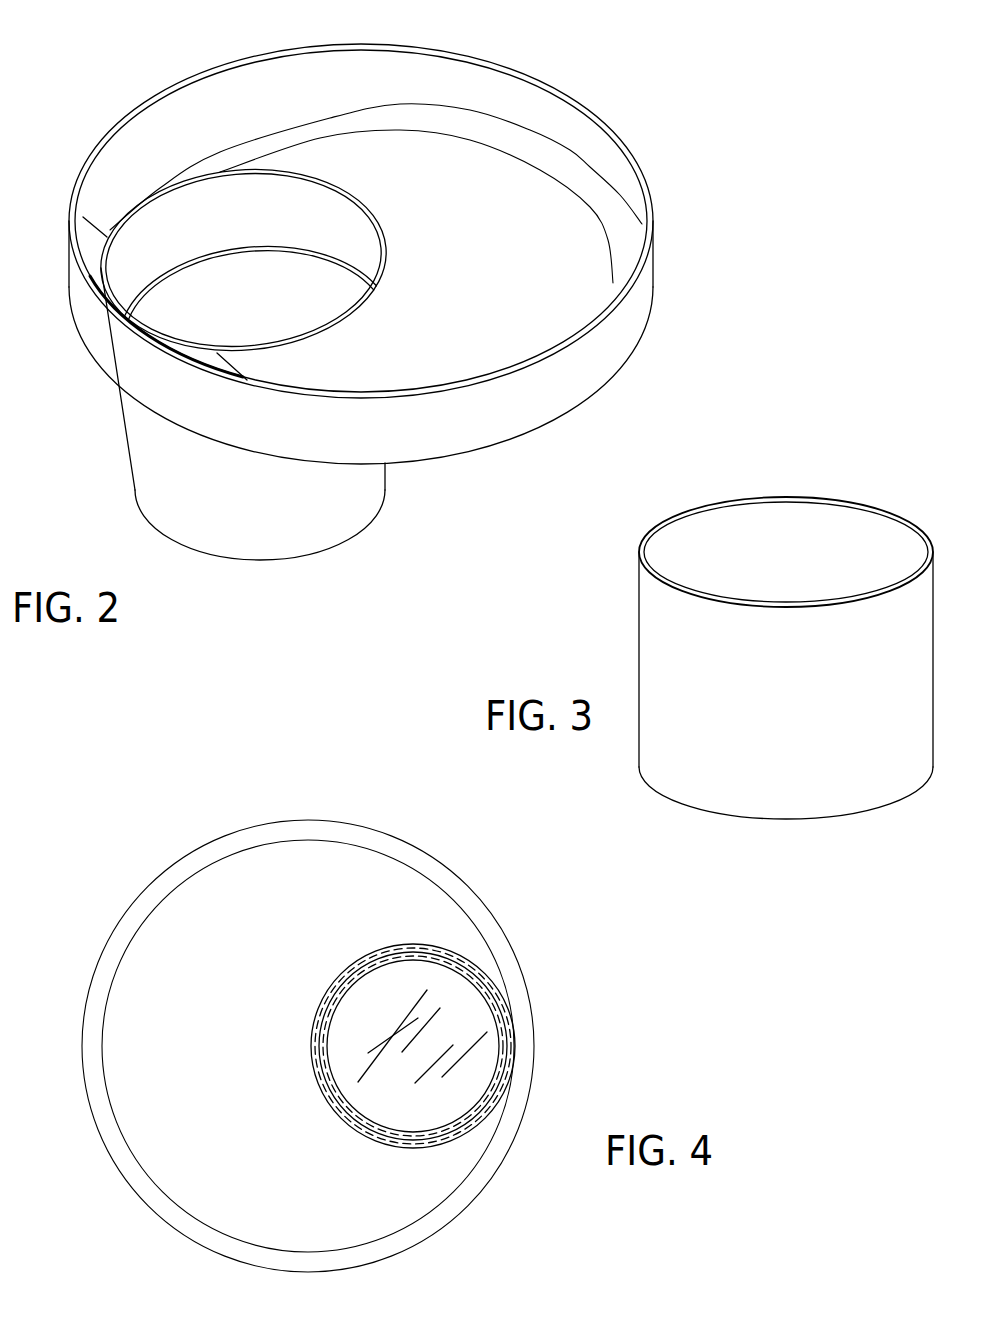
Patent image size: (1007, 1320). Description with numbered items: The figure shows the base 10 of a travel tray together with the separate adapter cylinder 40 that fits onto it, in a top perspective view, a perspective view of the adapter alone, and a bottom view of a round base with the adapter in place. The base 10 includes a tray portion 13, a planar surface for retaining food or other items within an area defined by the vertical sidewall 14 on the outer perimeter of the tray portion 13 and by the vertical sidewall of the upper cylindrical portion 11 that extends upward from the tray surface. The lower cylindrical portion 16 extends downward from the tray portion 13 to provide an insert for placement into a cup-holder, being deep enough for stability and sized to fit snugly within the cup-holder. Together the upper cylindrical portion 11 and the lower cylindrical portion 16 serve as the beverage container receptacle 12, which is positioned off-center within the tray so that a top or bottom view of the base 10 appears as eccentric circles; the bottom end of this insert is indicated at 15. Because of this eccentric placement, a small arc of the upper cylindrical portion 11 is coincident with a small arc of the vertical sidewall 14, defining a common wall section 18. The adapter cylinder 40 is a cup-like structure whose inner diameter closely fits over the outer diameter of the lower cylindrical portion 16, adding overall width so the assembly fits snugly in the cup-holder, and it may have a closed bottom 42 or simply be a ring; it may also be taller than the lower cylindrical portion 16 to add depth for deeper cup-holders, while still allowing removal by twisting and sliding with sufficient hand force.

In FIG. 2, the base 10 is at (630, 109).
In FIG. 4, the base 10 is at (182, 924).
In FIG. 2, the upper cylindrical portion 11 is at (339, 199).
In FIG. 2, the beverage container receptacle 12 is at (244, 327).
In FIG. 2, the tray portion 13 is at (505, 254).
In FIG. 2, the vertical sidewall 14 is at (127, 139).
In FIG. 4, the vertical sidewall 14 is at (95, 975).
In FIG. 2, the cup holder bottom 15 is at (278, 560).
In FIG. 2, the lower cylindrical portion 16 is at (173, 475).
In FIG. 4, the lower cylindrical portion 16 is at (518, 1040).
In FIG. 2, the common wall section 18 is at (118, 375).
In FIG. 3, the adapter cylinder 40 is at (769, 487).
In FIG. 4, the adapter cylinder 40 is at (495, 983).
In FIG. 3, the closed bottom 42 is at (803, 816).
In FIG. 4, the closed bottom 42 is at (442, 1092).